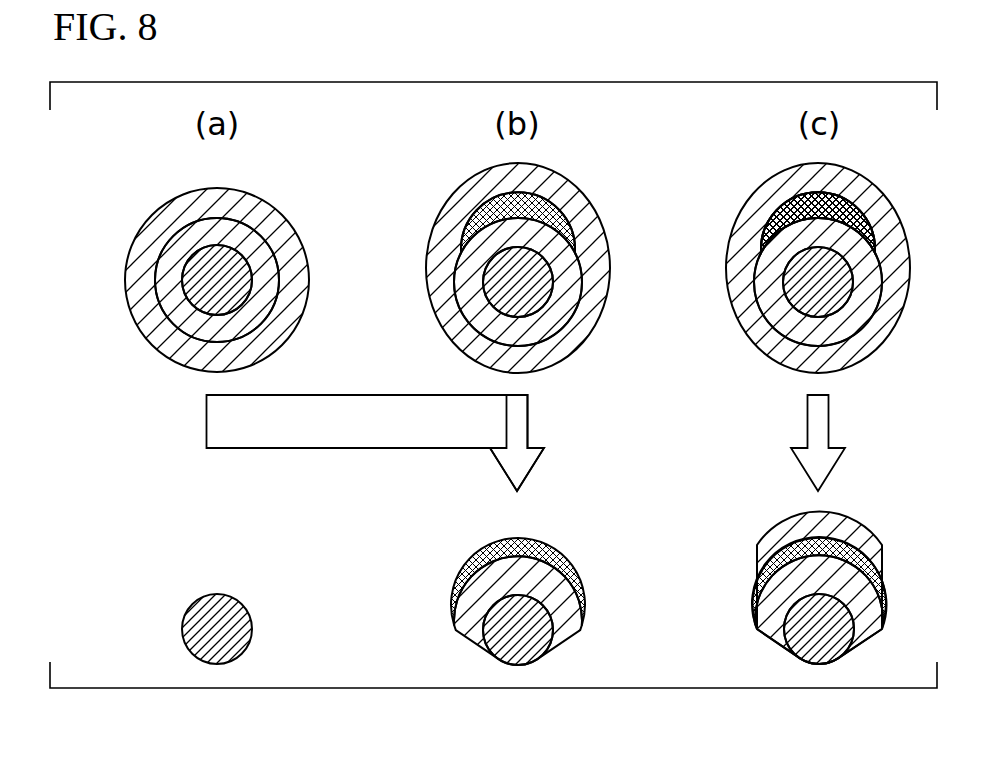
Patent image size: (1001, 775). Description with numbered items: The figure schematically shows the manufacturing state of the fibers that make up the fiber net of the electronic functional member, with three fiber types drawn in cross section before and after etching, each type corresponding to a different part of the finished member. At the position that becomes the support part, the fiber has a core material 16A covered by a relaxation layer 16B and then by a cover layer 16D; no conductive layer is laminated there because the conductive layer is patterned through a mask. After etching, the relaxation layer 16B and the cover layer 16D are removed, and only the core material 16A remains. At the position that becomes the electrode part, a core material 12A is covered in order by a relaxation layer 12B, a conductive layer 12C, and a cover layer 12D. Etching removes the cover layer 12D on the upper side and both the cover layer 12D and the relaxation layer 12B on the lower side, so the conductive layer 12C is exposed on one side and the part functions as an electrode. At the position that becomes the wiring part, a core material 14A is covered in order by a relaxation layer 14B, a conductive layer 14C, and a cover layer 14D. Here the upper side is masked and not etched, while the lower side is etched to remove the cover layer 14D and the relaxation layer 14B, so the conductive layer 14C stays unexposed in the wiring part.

The core material 12A is at (495, 272).
The relaxation layer 12B is at (503, 238).
The conductive layer 12C is at (500, 208).
The cover layer 12D is at (503, 178).
The core material 14A is at (795, 272).
The relaxation layer 14B is at (803, 238).
The conductive layer 14C is at (800, 208).
The cover layer 14D is at (803, 178).
The core material 16A is at (193, 273).
The relaxation layer 16B is at (200, 238).
The cover layer 16D is at (203, 207).